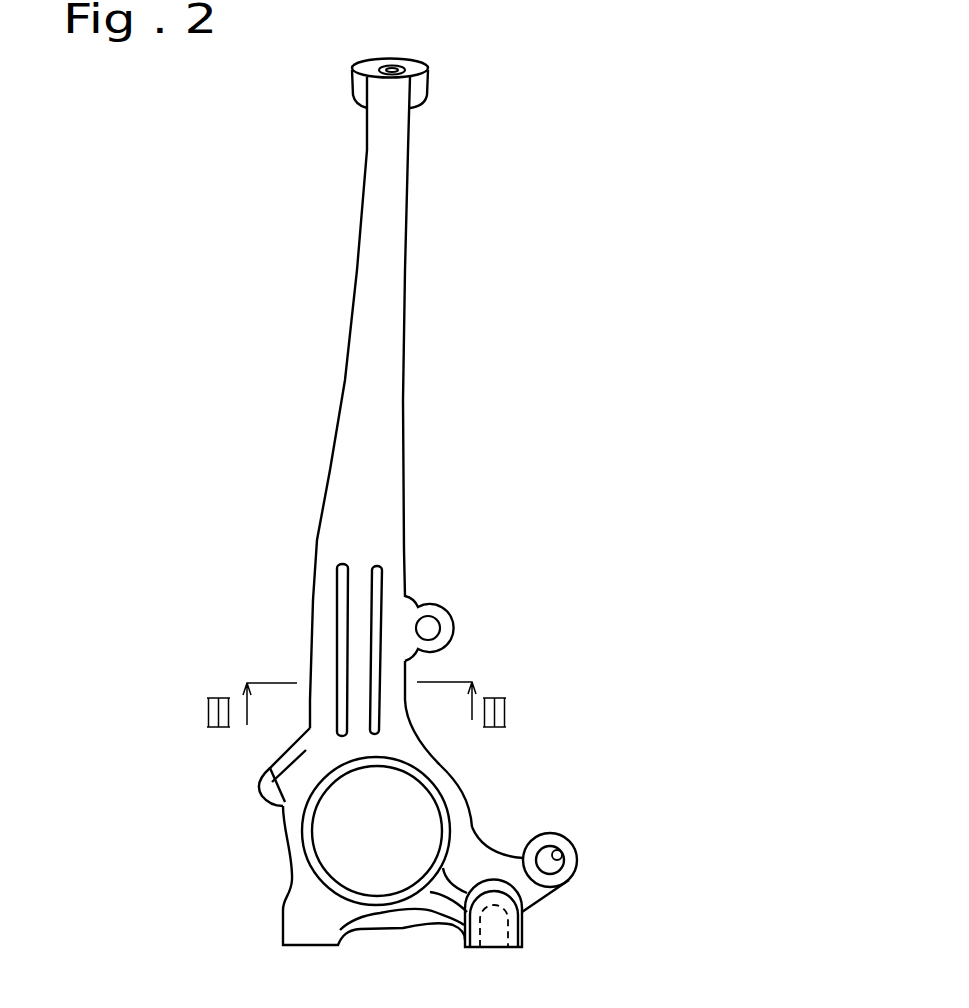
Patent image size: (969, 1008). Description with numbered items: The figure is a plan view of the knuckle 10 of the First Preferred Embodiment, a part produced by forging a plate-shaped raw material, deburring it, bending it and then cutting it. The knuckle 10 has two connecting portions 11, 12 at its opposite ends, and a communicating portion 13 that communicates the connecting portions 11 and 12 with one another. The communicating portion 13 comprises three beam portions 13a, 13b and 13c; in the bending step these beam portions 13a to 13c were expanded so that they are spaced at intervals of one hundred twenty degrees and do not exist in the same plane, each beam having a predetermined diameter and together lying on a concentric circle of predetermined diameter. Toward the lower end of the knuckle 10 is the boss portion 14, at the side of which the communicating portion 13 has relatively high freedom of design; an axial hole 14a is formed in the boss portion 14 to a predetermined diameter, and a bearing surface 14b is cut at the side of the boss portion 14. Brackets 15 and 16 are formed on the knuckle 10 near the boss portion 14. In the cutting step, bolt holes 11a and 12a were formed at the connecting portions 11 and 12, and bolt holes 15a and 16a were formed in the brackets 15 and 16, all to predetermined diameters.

The knuckle 10 is at (296, 313).
The connecting portion 11 is at (417, 95).
The bolt hole 11a is at (390, 70).
The connecting portion 12 is at (515, 948).
The bolt hole 12a is at (488, 948).
The communicating portion 13 is at (387, 376).
The beam portion 13a is at (395, 668).
The beam portion 13b is at (362, 615).
The beam portion 13c is at (332, 628).
The boss portion 14 is at (452, 793).
The bore 14a is at (313, 830).
The bearing surface 14b is at (278, 765).
The bracket 15 is at (414, 605).
The bolt hole 15a is at (433, 628).
The bracket 16 is at (567, 873).
The bolt hole 16a is at (561, 855).